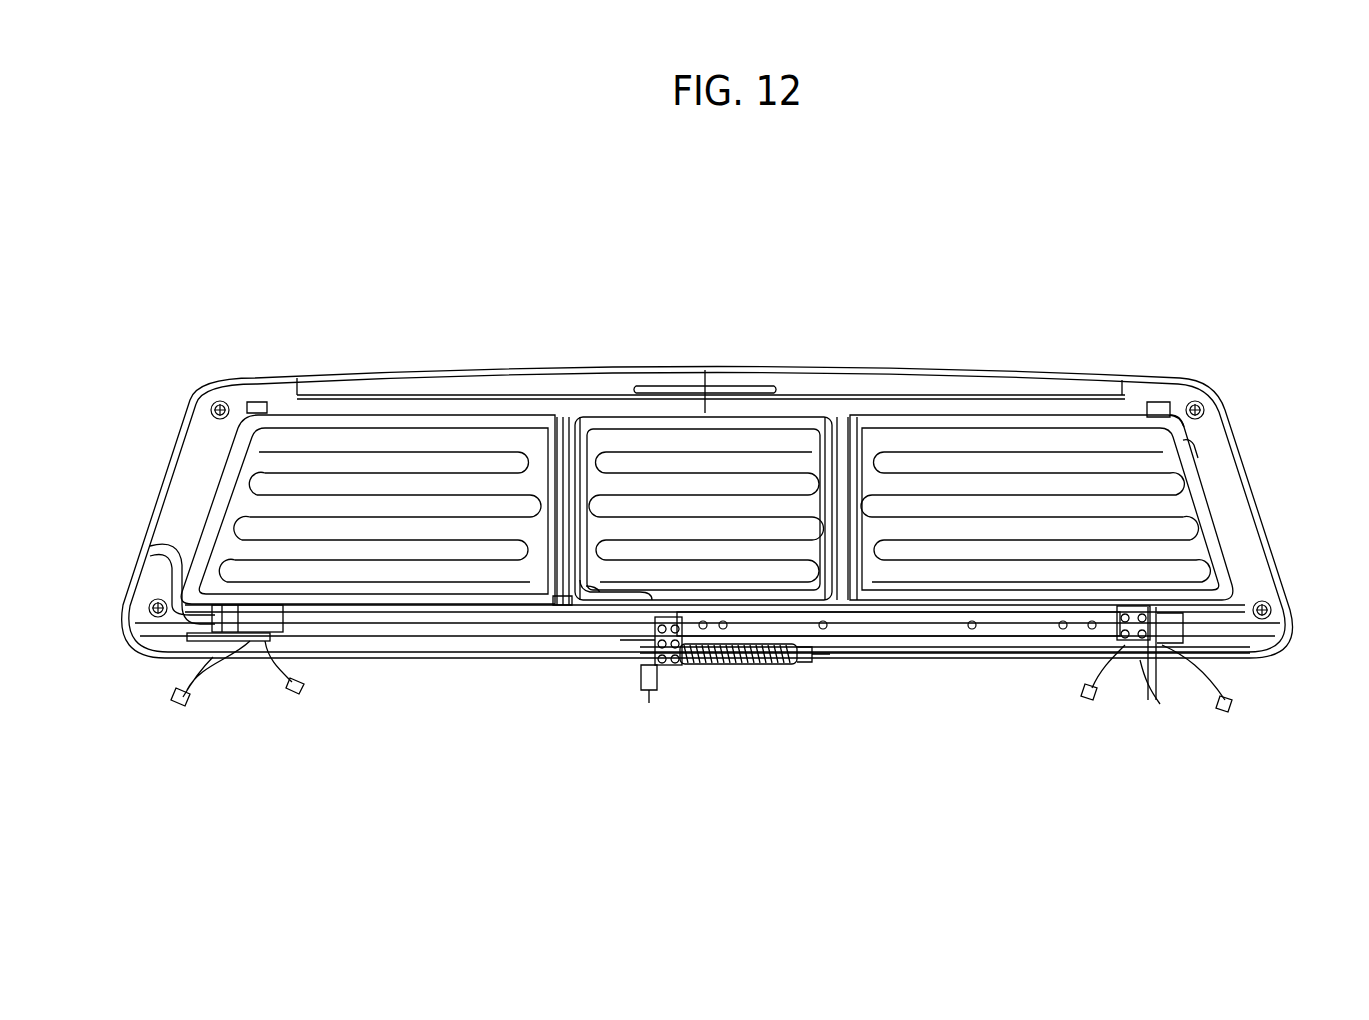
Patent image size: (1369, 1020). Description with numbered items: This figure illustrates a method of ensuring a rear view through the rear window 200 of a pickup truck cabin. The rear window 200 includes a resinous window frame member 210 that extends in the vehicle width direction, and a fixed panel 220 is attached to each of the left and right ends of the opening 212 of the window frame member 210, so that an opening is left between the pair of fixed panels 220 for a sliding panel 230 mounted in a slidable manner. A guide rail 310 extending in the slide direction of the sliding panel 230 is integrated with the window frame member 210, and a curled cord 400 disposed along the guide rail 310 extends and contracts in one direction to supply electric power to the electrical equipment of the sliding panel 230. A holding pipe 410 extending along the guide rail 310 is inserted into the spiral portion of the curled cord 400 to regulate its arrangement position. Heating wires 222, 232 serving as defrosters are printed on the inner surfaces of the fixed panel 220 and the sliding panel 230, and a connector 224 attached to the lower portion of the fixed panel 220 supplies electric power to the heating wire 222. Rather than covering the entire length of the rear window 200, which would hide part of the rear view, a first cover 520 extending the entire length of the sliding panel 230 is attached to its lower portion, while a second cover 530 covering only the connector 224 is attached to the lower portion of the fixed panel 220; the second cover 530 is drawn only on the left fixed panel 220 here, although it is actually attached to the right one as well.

The rear window 200 is at (154, 421).
The window frame member 210 is at (1263, 480).
The opening 212 is at (1185, 438).
The fixed panel 220 is at (437, 448).
The heating wire 222 is at (345, 452).
The connector 224 is at (265, 636).
The sliding panel 230 is at (730, 443).
The heating wire 232 is at (647, 452).
The guide rail 310 is at (896, 628).
The curled cord 400 is at (750, 664).
The holding pipe 410 is at (980, 656).
The first cover 520 is at (640, 592).
The second cover 530 is at (208, 612).